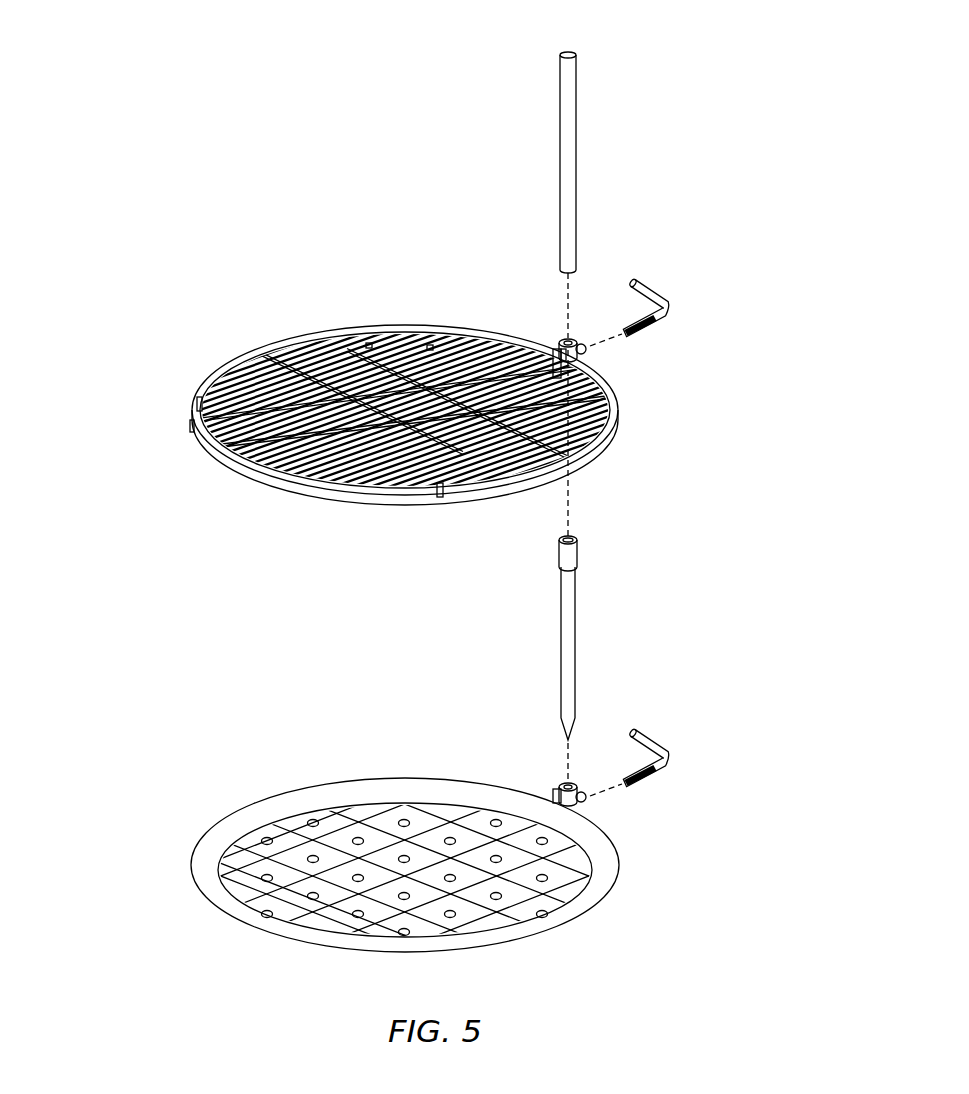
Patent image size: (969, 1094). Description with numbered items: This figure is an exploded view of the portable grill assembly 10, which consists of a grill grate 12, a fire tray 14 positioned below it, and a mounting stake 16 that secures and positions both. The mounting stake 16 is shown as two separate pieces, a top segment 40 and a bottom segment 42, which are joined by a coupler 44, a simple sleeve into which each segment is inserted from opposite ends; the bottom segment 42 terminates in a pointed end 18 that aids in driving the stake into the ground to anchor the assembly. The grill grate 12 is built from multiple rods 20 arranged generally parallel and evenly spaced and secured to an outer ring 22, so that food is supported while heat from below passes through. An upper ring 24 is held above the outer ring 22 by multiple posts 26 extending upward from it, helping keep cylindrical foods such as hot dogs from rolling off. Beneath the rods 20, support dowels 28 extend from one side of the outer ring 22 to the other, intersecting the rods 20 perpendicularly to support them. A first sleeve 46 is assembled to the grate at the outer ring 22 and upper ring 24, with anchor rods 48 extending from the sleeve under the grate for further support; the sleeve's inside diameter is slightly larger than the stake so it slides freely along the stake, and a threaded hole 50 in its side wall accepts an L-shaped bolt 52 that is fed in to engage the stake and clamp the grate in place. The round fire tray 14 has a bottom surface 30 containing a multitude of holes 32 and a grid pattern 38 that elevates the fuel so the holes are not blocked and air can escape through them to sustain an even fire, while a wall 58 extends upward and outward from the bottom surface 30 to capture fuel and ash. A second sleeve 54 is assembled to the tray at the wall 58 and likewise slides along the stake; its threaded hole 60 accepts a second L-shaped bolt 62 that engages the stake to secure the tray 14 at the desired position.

The portable grill assembly 10 is at (166, 132).
The grill grate 12 is at (242, 437).
The fire tray 14 is at (208, 857).
The mounting stake 16 is at (566, 217).
The pointed end 18 is at (571, 722).
The rods 20 is at (315, 390).
The outer ring 22 is at (430, 348).
The upper ring 24 is at (253, 348).
The posts 26 is at (369, 345).
The support dowels 28 is at (318, 490).
The bottom surface 30 is at (240, 897).
The holes 32 is at (313, 895).
The grid pattern 38 is at (487, 922).
The top segment 40 is at (569, 120).
The bottom segment 42 is at (566, 607).
The coupler 44 is at (570, 560).
The first sleeve 46 is at (585, 357).
The anchor rods 48 is at (533, 393).
The threaded hole 50 is at (583, 350).
The bolt 52 is at (652, 293).
The second sleeve 54 is at (582, 803).
The wall 58 is at (231, 816).
The threaded hole 60 is at (588, 798).
The bolt 62 is at (667, 752).